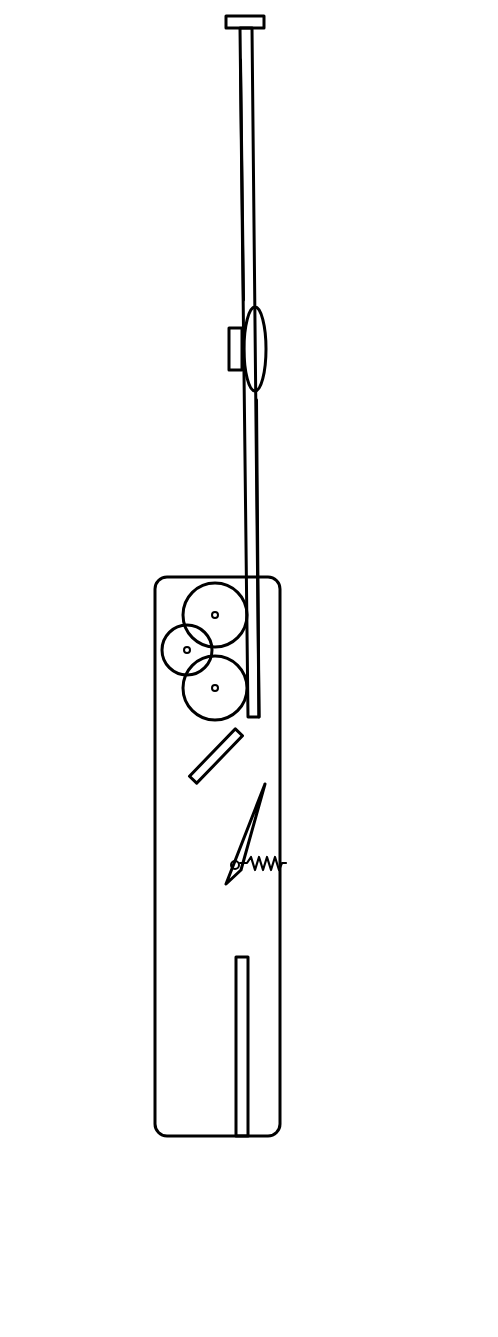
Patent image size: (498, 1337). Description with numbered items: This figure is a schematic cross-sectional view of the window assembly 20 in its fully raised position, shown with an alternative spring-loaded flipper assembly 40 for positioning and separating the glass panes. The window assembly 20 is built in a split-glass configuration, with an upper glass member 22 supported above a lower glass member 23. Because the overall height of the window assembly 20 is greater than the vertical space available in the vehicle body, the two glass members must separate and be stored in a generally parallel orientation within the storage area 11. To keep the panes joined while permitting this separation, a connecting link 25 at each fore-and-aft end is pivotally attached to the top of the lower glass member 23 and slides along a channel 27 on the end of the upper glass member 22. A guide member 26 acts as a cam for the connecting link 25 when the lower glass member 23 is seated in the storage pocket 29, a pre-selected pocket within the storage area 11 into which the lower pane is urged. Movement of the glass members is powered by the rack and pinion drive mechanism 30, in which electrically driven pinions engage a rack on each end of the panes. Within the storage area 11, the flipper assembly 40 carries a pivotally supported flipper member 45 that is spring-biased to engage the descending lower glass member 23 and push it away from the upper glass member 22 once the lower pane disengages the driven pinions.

The window assembly 20 is at (348, 188).
The upper glass member 22 is at (247, 120).
The channel 27 is at (243, 283).
The connecting link 25 is at (266, 342).
The guide member 26 is at (228, 350).
The lower glass member 23 is at (258, 461).
The rack and pinion drive mechanism 30 is at (170, 688).
The flipper assembly 40 is at (299, 826).
The flipper member 45 is at (243, 822).
The storage area 11 is at (191, 970).
The storage pocket 29 is at (191, 1084).